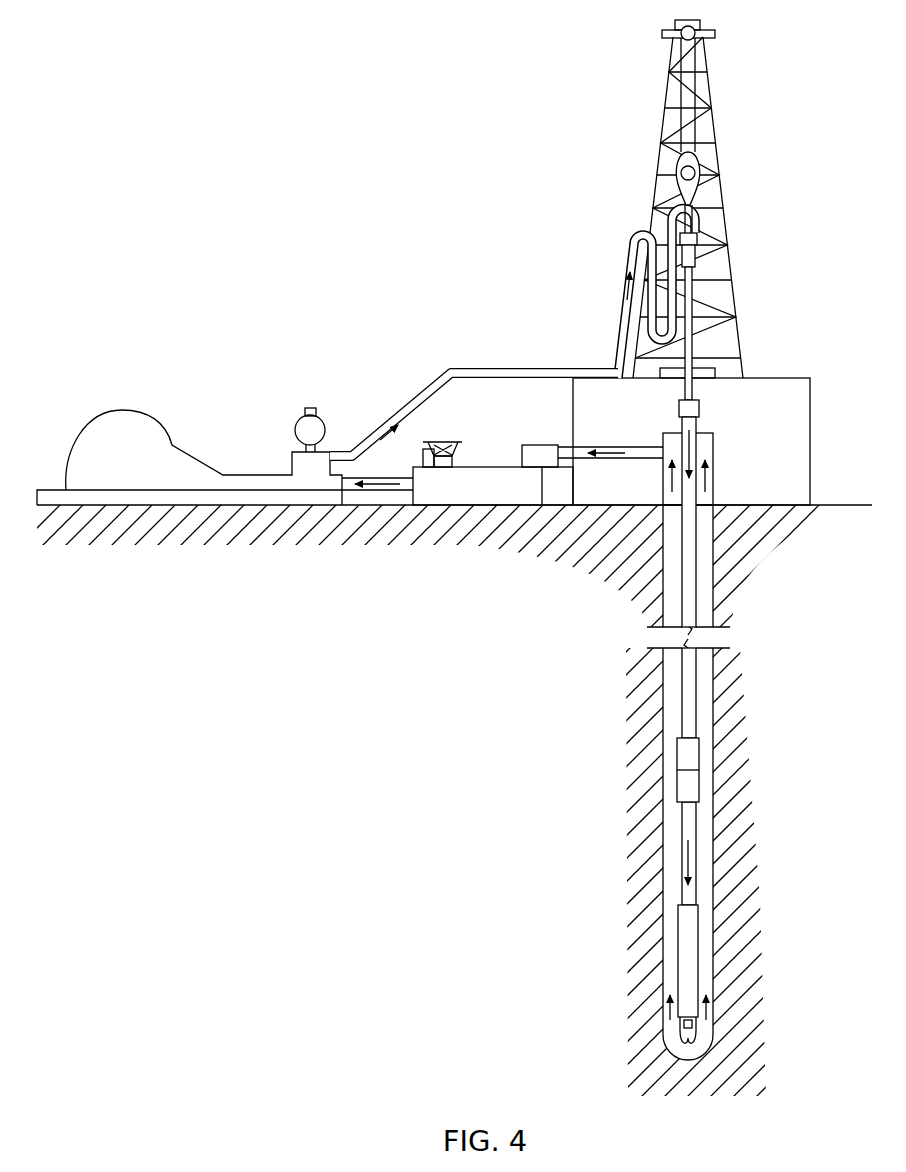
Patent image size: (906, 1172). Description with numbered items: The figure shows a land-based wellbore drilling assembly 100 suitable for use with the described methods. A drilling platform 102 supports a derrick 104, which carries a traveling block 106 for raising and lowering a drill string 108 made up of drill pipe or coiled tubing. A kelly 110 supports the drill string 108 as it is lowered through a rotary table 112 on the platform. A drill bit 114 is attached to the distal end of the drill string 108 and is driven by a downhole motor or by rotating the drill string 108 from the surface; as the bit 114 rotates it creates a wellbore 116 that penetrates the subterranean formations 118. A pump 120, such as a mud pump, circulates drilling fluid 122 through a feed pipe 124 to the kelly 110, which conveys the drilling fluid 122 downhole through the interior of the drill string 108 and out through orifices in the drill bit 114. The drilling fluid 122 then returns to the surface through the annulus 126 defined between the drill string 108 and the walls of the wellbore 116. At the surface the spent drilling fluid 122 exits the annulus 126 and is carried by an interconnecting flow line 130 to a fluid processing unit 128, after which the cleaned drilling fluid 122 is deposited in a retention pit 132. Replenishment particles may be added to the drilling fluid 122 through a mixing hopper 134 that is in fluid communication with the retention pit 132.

The wellbore drilling assembly 100 is at (411, 103).
The drilling platform 102 is at (810, 396).
The derrick 104 is at (714, 122).
The traveling block 106 is at (700, 163).
The drill string 108 is at (690, 583).
The kelly 110 is at (688, 290).
The rotary table 112 is at (716, 373).
The drill bit 114 is at (709, 1032).
The wellbore 116 is at (716, 700).
The subterranean formations 118 is at (553, 788).
The pump 120 is at (131, 470).
The drilling fluid 122 is at (350, 458).
The feed pipe 124 is at (448, 369).
The annulus 126 is at (703, 858).
The fluid processing unit 128 is at (540, 445).
The flow line 130 is at (648, 459).
The retention pit 132 is at (522, 495).
The mixing hopper 134 is at (430, 467).